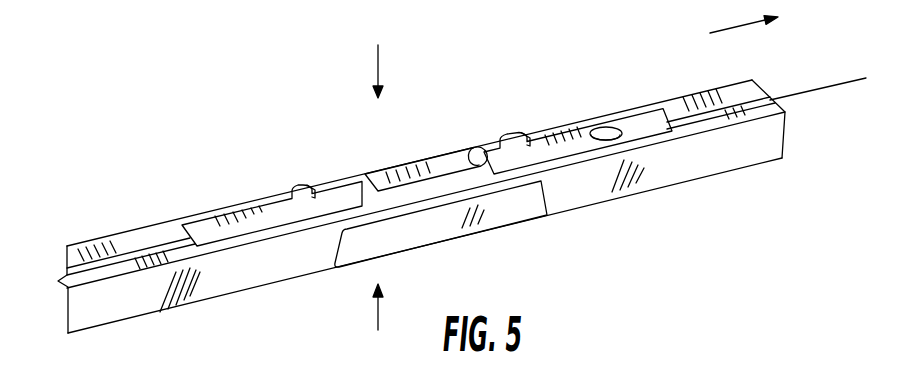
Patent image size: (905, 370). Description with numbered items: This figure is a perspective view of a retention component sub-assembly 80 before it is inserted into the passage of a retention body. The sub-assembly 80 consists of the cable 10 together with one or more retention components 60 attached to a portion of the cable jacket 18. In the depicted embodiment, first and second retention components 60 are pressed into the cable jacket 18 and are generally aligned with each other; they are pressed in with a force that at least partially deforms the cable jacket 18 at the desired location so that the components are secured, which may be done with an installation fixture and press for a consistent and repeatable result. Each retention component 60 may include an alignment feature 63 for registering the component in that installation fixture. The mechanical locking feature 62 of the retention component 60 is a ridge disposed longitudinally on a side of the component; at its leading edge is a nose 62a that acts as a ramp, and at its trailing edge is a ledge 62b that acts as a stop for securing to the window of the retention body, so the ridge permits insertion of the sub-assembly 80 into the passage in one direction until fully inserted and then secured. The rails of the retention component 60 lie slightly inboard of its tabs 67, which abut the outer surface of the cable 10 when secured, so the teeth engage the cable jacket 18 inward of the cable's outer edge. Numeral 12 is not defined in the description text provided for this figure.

The cable 10 is at (223, 297).
The cable 12 is at (808, 90).
The cable jacket 18 is at (686, 181).
The retention component 60 is at (505, 216).
The mechanical locking feature 62 is at (403, 172).
The nose 62a is at (578, 167).
The ledge 62b is at (360, 178).
The alignment feature 63 is at (608, 127).
The tab 67 is at (427, 232).
The retention component sub-assembly 80 is at (165, 197).